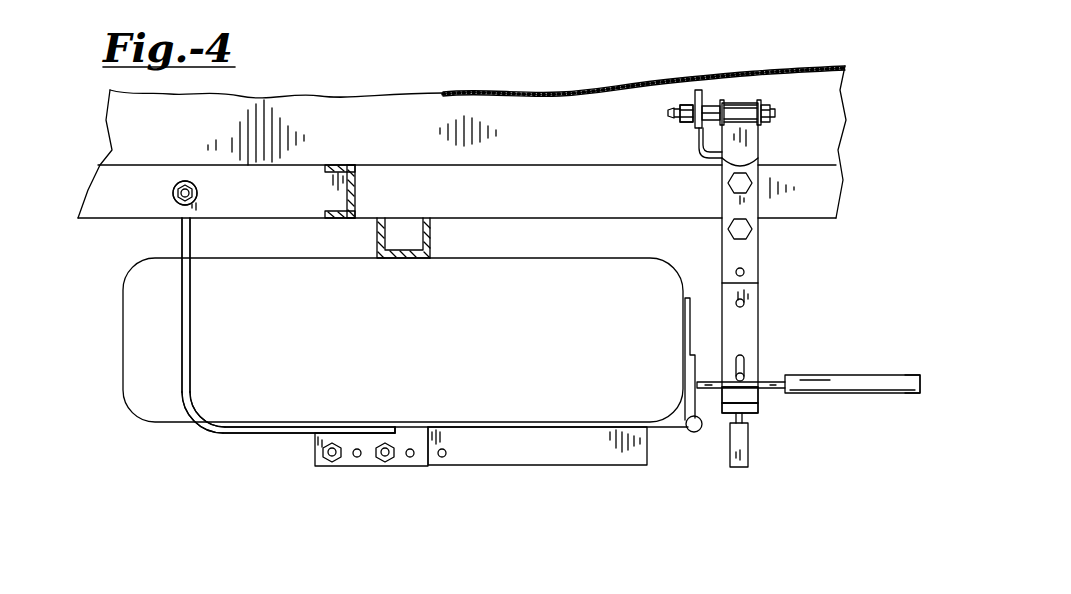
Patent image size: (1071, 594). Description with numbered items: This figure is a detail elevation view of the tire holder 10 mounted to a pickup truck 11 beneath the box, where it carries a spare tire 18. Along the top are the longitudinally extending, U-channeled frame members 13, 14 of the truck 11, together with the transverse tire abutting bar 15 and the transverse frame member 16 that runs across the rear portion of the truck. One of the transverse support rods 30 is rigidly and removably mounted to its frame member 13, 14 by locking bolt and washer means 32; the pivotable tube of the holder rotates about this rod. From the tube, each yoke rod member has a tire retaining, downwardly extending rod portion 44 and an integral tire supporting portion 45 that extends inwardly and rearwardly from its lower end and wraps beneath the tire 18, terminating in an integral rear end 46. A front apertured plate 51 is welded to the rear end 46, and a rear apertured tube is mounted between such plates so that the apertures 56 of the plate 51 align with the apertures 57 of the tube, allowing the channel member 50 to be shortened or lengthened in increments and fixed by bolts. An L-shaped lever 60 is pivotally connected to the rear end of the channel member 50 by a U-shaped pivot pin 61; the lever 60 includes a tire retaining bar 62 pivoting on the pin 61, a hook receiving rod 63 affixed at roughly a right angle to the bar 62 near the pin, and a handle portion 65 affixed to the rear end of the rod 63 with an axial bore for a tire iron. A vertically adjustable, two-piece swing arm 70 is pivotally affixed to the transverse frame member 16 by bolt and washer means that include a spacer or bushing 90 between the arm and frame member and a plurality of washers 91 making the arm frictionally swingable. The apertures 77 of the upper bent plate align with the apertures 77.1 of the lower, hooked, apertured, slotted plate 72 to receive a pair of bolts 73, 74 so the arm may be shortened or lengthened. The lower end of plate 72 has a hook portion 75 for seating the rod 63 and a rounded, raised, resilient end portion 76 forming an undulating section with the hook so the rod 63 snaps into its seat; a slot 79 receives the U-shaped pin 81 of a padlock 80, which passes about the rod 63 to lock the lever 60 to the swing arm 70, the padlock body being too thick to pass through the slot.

The tire holder 10 is at (186, 435).
The pickup truck 11 is at (403, 92).
The longitudinally extending U-channeled frame member 13 is at (310, 178).
The longitudinally extending U-channeled frame member 14 is at (532, 183).
The transverse tire abutting bar 15 is at (375, 240).
The transverse frame member 16 is at (700, 157).
The spare tire 18 is at (128, 268).
The transverse support rod 30 is at (197, 184).
The locking bolt and washer means 32 is at (178, 201).
The downwardly extending rod portion 44 is at (190, 352).
The tire supporting portion 45 is at (240, 437).
The rear end 46 is at (348, 440).
The channel member 50 is at (418, 468).
The front apertured plate 51 is at (316, 460).
The aperture 56 is at (357, 460).
The aperture 57 is at (442, 460).
The L-shaped lever 60 is at (862, 376).
The U-shaped pivot pin 61 is at (665, 425).
The tire retaining bar 62 is at (696, 333).
The hook receiving rod 63 is at (768, 390).
The handle portion 65 is at (860, 394).
The swing arm 70 is at (762, 300).
The lower hooked apertured slotted plate 72 is at (680, 100).
The bolt 73 is at (728, 178).
The bolt 74 is at (755, 230).
The hook portion 75 is at (755, 408).
The rounded raised resilient end portion 76 is at (722, 410).
The aperture 77 is at (748, 272).
The aperture 77.1 is at (743, 302).
The slot 79 is at (741, 358).
The padlock 80 is at (740, 468).
The U-shaped pin 81 is at (745, 376).
The spacer or bushing 90 is at (712, 100).
The washer 91 is at (762, 100).